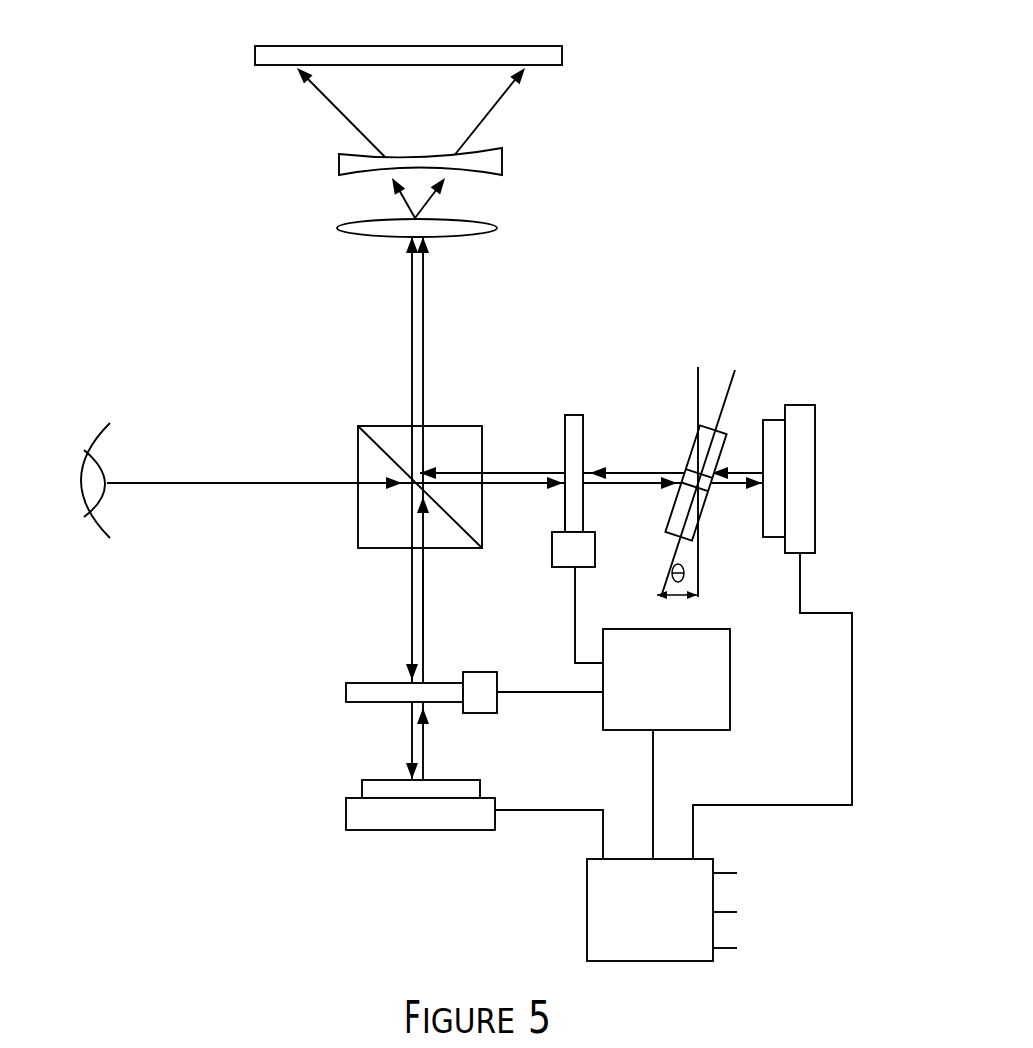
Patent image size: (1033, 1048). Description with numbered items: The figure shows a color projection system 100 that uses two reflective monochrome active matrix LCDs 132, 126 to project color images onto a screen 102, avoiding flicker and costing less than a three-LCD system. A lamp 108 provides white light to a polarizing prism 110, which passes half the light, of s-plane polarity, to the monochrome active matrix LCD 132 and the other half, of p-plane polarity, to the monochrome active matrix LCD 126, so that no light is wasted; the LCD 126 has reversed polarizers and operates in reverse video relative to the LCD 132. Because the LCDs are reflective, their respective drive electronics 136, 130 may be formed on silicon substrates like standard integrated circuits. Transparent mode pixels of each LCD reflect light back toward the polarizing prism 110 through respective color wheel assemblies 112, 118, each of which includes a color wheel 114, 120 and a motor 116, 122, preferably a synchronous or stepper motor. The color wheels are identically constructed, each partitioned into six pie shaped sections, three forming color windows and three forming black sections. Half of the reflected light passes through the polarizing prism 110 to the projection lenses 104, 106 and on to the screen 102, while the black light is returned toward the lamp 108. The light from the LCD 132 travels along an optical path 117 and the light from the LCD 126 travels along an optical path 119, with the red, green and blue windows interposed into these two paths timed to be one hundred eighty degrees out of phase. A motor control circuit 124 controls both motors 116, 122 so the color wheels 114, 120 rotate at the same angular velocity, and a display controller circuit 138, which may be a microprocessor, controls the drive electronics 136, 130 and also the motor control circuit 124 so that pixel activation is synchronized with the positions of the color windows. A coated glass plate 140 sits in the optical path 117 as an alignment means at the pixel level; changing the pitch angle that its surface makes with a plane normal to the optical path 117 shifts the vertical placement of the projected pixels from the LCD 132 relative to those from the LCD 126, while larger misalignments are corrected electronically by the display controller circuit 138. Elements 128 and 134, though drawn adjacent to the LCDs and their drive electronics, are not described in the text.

The color projection system 100 is at (195, 618).
The screen 102 is at (455, 46).
The projection lens 104 is at (502, 160).
The projection lens 106 is at (497, 228).
The lamp 108 is at (110, 423).
The polarizing prism 110 is at (370, 426).
The color wheel assembly 112 is at (572, 405).
The color wheel 114 is at (565, 510).
The motor 116 is at (552, 565).
The optical path 117 is at (497, 470).
The color wheel assembly 118 is at (350, 663).
The optical path 119 is at (463, 600).
The color wheel 120 is at (346, 697).
The motor 122 is at (487, 672).
The motor control circuit 124 is at (730, 705).
The monochrome active matrix LCD 126 is at (345, 765).
The light source 128 is at (362, 792).
The drive electronics 130 is at (346, 823).
The monochrome active matrix LCD 132 is at (764, 386).
The display element 134 is at (763, 517).
The drive electronics 136 is at (815, 540).
The display controller circuit 138 is at (587, 893).
The glass plate 140 is at (687, 455).